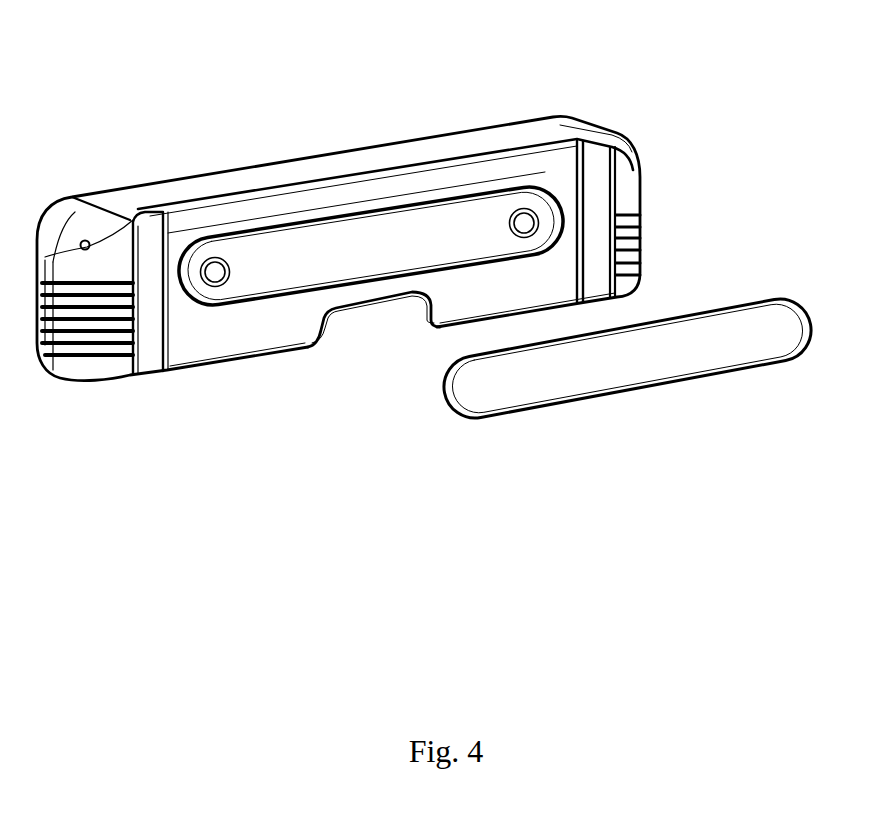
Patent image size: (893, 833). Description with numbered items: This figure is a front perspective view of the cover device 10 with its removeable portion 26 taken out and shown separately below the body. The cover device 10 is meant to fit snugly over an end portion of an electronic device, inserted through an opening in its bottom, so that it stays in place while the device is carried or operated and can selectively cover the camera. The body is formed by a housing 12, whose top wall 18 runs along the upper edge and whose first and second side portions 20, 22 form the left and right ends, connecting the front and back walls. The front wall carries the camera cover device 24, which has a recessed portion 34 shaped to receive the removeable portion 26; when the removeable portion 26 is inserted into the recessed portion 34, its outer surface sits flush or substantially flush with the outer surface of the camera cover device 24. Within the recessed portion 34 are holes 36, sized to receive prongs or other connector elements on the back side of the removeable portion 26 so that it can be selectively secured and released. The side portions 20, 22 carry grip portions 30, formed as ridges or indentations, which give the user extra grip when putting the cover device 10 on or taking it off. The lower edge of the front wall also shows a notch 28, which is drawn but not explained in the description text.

The cover device 10 is at (528, 83).
The housing 12 is at (145, 223).
The top wall 18 is at (273, 175).
The first side portion 20 is at (102, 273).
The second side portion 22 is at (627, 185).
The camera cover device 24 is at (222, 335).
The removeable portion 26 is at (627, 360).
The notch 28 is at (350, 318).
The grip portions 30 is at (90, 333).
The recessed portion 34 is at (375, 240).
The holes 36 is at (520, 212).